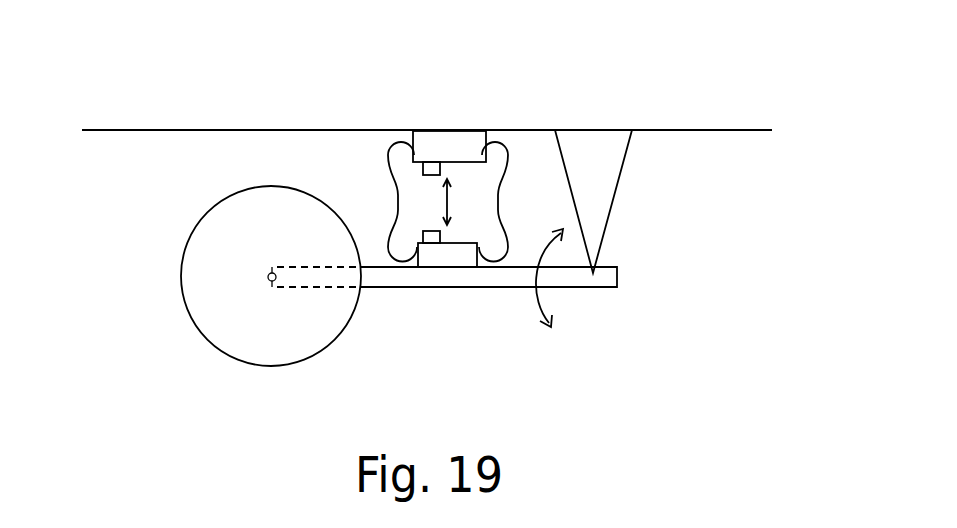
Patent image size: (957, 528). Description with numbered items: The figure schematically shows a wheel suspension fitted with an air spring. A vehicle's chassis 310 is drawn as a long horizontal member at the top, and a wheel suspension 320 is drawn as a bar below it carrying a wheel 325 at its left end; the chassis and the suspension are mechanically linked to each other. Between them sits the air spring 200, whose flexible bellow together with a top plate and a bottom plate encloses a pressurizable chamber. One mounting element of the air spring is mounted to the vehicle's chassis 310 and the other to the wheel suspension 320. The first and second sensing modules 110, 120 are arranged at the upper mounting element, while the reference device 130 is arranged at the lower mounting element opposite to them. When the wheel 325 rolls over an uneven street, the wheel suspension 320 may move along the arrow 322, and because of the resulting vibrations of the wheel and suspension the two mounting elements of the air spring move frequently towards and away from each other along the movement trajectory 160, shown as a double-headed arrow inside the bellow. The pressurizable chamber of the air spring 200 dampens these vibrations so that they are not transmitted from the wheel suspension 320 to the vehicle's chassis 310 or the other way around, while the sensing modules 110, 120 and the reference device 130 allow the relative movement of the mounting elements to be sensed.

The first sensing module 110 is at (348, 102).
The second sensing module 120 is at (449, 153).
The reference device 130 is at (432, 243).
The movement trajectory 160 is at (427, 203).
The air spring 200 is at (427, 203).
The vehicle's chassis 310 is at (750, 130).
The wheel suspension 320 is at (517, 278).
The arrow 322 is at (543, 305).
The wheel 325 is at (182, 275).